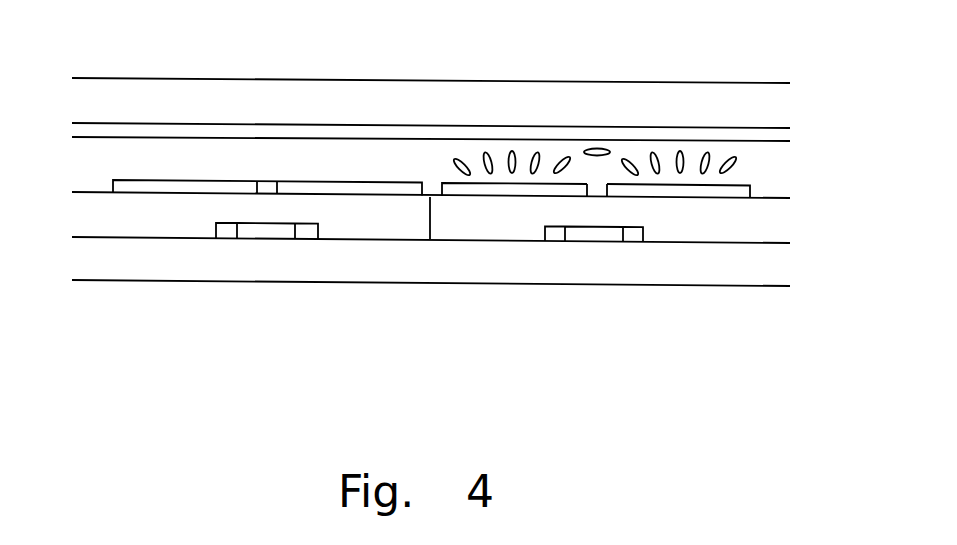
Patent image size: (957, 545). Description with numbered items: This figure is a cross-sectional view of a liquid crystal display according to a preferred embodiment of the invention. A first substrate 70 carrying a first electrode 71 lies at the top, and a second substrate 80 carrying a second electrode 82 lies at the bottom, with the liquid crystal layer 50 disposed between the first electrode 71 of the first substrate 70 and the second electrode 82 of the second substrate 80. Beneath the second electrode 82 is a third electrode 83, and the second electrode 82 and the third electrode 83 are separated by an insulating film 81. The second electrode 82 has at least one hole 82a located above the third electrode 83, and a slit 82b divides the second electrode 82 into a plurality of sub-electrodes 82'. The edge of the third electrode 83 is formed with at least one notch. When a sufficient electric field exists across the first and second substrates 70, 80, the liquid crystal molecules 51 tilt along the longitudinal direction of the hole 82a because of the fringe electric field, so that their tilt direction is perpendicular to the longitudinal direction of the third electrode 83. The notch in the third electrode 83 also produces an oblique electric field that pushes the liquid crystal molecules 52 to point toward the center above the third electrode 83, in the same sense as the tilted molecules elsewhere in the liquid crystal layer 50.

The first substrate 70 is at (778, 97).
The first electrode 71 is at (782, 135).
The liquid crystal layer 50 is at (762, 168).
The liquid crystal molecules 52 is at (533, 170).
The liquid crystal molecules 51 is at (602, 150).
The sub-electrodes 82' is at (437, 123).
The hole 82a is at (263, 182).
The second electrode 82 is at (460, 273).
The slit 82b is at (423, 197).
The insulating film 81 is at (753, 230).
The second substrate 80 is at (753, 268).
The third electrode 83 is at (430, 279).